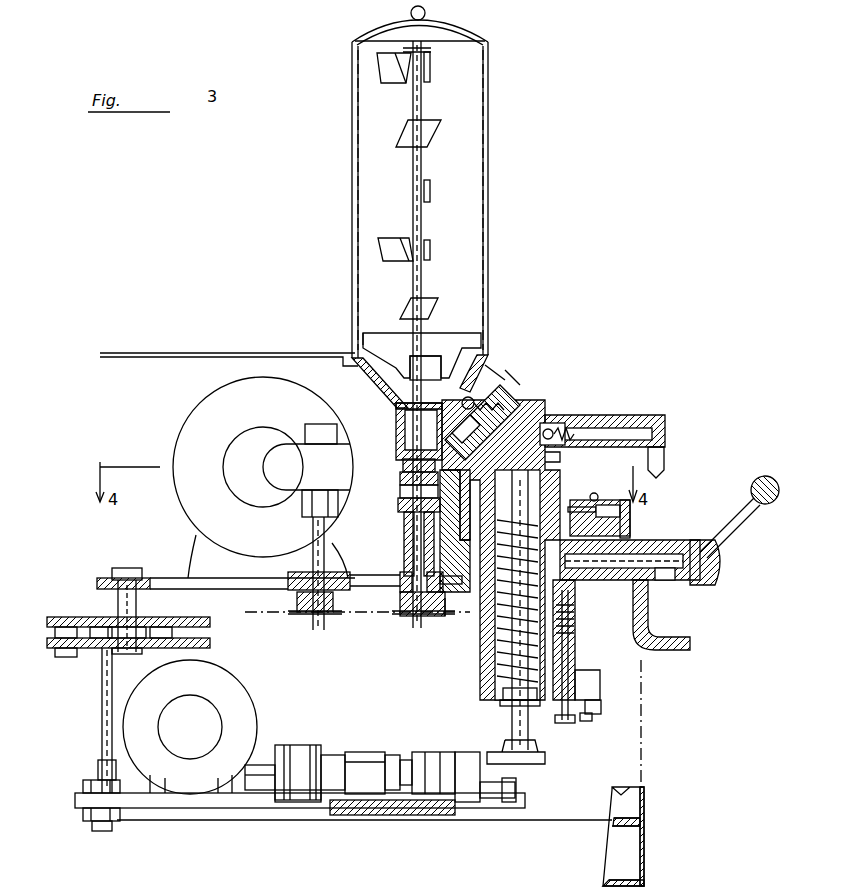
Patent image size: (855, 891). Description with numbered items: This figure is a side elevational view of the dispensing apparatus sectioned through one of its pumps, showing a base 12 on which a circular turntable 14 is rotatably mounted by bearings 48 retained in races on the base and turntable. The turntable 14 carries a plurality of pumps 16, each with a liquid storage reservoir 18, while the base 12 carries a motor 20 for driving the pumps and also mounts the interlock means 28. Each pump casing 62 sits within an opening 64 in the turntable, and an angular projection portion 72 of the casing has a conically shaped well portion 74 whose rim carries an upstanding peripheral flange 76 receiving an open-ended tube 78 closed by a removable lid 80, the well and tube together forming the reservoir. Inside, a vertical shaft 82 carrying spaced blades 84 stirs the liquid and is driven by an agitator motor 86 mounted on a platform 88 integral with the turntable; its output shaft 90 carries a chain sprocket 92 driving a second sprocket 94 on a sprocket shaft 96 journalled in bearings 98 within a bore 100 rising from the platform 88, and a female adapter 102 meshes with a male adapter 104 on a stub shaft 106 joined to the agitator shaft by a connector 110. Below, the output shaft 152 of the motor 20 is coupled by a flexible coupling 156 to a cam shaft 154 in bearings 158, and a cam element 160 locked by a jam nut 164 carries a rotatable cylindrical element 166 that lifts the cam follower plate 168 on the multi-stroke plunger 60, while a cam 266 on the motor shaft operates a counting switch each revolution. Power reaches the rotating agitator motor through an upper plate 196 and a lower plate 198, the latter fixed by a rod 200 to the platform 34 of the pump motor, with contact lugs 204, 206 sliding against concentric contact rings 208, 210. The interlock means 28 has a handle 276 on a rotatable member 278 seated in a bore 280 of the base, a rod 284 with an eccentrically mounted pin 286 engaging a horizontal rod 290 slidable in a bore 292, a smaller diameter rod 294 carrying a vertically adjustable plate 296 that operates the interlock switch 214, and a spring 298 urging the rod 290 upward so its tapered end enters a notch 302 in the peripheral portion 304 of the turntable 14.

The base 12 is at (658, 626).
The turntable 14 is at (455, 536).
The pump 16 is at (592, 392).
The liquid storage reservoir 18 is at (461, 346).
The motor 20 is at (240, 692).
The interlock means 28 is at (665, 542).
The platform 34 is at (170, 809).
The bearings 48 is at (600, 497).
The plunger 60 is at (515, 718).
The pump casing 62 is at (470, 446).
The opening 64 is at (463, 475).
The angular projection portion 72 is at (398, 436).
The well portion 74 is at (367, 372).
The upstanding peripheral flange 76 is at (365, 347).
The open-ended tube 78 is at (489, 250).
The removable lid 80 is at (461, 31).
The vertical shaft 82 is at (424, 164).
The blades 84 is at (428, 131).
The agitator motor 86 is at (186, 430).
The platform 88 is at (165, 578).
The output shaft 90 is at (311, 530).
The chain sprocket 92 is at (304, 614).
The second sprocket 94 is at (432, 614).
The sprocket shaft 96 is at (412, 618).
The bearings 98 is at (405, 512).
The bore 100 is at (406, 551).
The female adapter 102 is at (405, 497).
The male adapter 104 is at (405, 481).
The stub shaft 106 is at (405, 470).
The connector 110 is at (398, 418).
The output shaft 152 is at (263, 791).
The cam shaft 154 is at (432, 756).
The flexible coupling 156 is at (346, 752).
The bearings 158 is at (390, 752).
The cam element 160 is at (468, 803).
The jam nut 164 is at (450, 756).
The rotatable cylindrical element 166 is at (517, 797).
The cam follower plate 168 is at (528, 765).
The upper plate 196 is at (183, 618).
The lower plate 198 is at (211, 643).
The rod 200 is at (96, 720).
The contact lug 204 is at (150, 617).
The contact lug 206 is at (57, 645).
The contact ring 208 is at (62, 620).
The contact ring 210 is at (96, 620).
The interlock switch 214 is at (601, 712).
The cam 266 is at (292, 803).
The handle 276 is at (740, 528).
The rotatable member 278 is at (708, 586).
The bore 280 is at (592, 594).
The rod 284 is at (660, 581).
The eccentrically mounted pin 286 is at (624, 565).
The horizontal rod 290 is at (578, 528).
The bore 292 is at (591, 511).
The smaller diameter rod 294 is at (577, 680).
The vertically adjustable plate 296 is at (592, 722).
The spring 298 is at (575, 632).
The notch 302 is at (592, 495).
The peripheral portion 304 is at (552, 460).